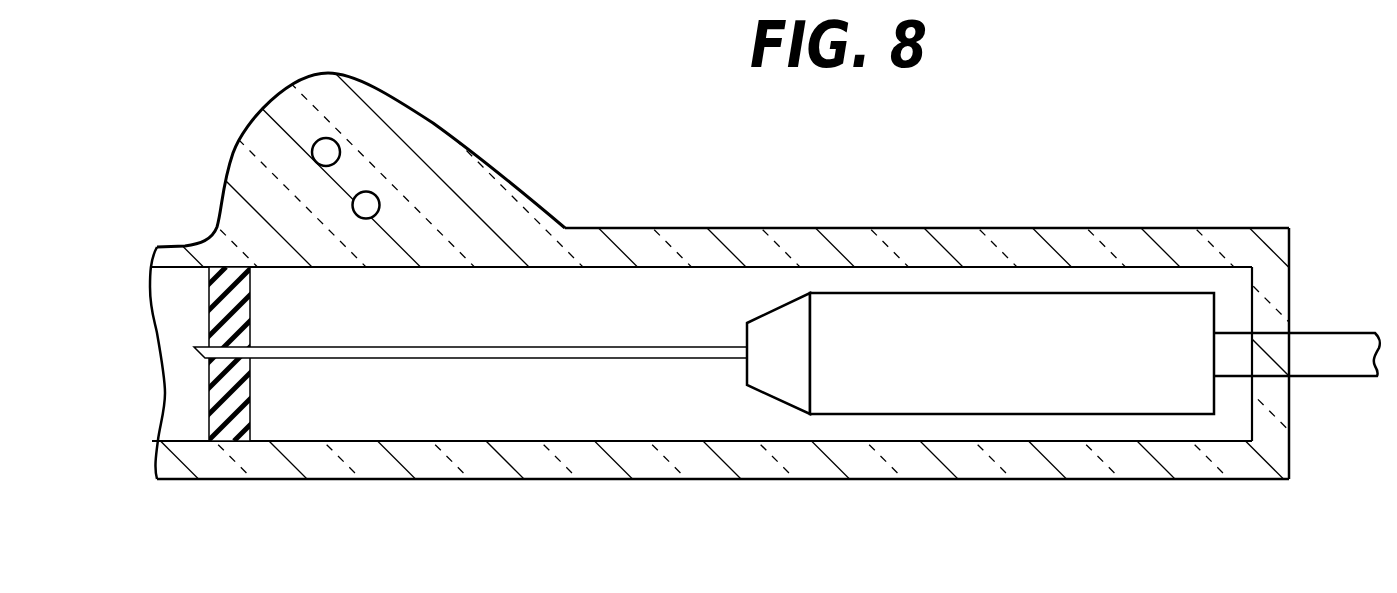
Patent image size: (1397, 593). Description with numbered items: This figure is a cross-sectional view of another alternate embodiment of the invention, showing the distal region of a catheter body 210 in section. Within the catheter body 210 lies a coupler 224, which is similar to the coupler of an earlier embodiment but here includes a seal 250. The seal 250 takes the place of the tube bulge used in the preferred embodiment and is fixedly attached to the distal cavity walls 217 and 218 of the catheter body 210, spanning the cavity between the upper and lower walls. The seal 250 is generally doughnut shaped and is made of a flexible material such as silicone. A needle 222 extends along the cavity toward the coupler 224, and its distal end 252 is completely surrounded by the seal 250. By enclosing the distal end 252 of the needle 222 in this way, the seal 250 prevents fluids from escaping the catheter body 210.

The catheter body 210 is at (845, 228).
The distal cavity wall 217 is at (587, 267).
The distal cavity wall 218 is at (583, 441).
The needle 222 is at (465, 360).
The coupler 224 is at (1033, 293).
The seal 250 is at (210, 298).
The distal end 252 is at (157, 362).